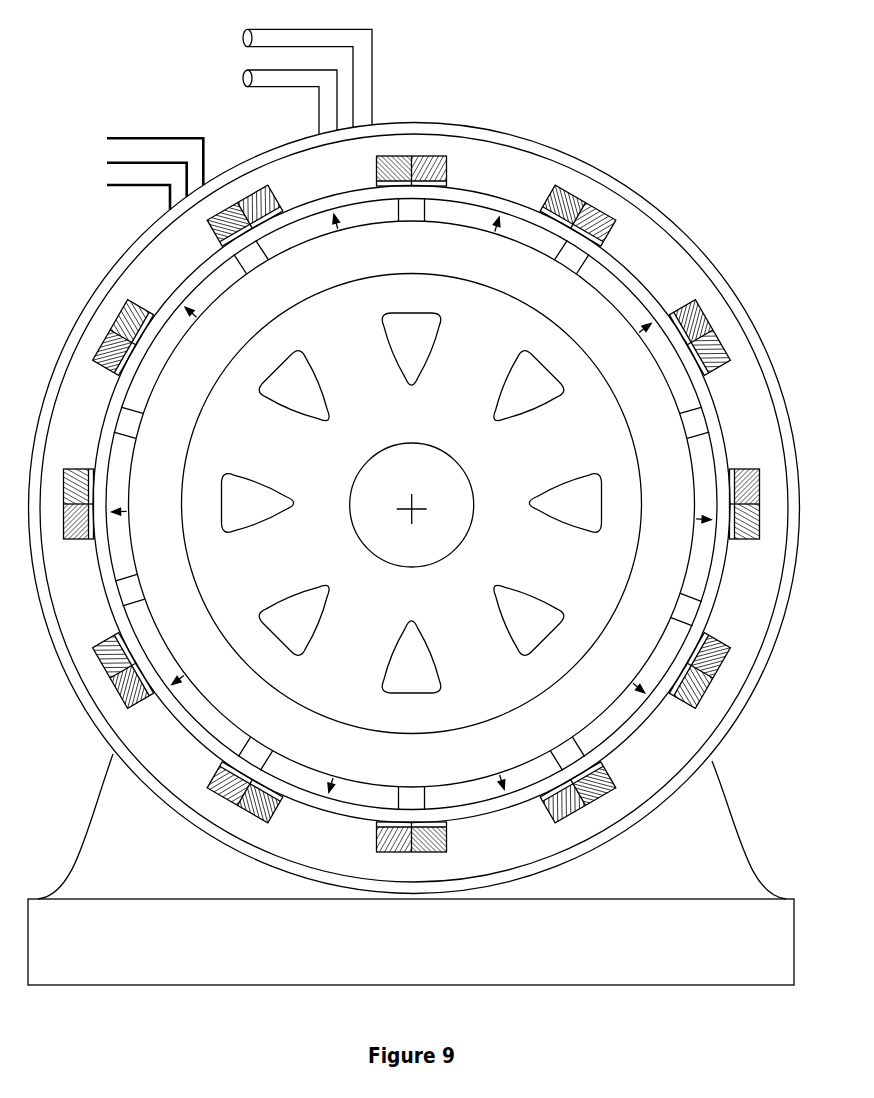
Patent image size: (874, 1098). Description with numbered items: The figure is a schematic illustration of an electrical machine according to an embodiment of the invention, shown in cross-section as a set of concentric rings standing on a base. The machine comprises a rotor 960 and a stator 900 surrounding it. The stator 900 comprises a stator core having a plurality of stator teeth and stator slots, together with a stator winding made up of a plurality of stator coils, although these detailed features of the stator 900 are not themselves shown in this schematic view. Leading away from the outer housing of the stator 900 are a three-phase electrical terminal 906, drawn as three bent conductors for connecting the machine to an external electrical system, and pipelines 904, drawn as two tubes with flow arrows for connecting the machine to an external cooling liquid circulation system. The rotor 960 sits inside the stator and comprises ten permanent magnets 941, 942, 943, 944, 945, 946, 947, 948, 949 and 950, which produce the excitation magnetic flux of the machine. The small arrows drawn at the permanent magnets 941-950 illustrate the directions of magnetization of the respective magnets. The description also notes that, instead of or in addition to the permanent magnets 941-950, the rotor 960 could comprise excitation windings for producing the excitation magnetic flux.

The stator 900 is at (567, 187).
The pipelines 904 is at (237, 40).
The three-phase electrical terminal 906 is at (98, 128).
The permanent magnet 941 is at (288, 242).
The permanent magnet 942 is at (203, 306).
The permanent magnet 943 is at (127, 443).
The permanent magnet 944 is at (143, 632).
The permanent magnet 945 is at (283, 772).
The permanent magnet 946 is at (465, 792).
The permanent magnet 947 is at (662, 657).
The permanent magnet 948 is at (710, 487).
The permanent magnet 949 is at (618, 301).
The permanent magnet 950 is at (467, 220).
The rotor 960 is at (318, 466).